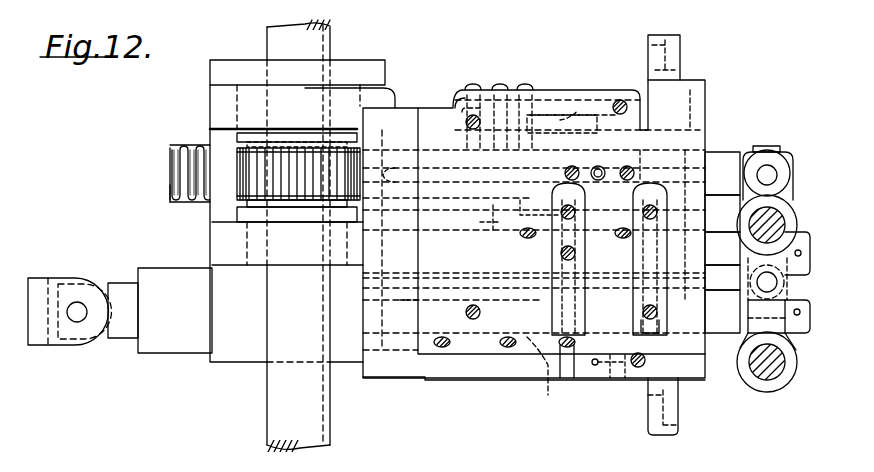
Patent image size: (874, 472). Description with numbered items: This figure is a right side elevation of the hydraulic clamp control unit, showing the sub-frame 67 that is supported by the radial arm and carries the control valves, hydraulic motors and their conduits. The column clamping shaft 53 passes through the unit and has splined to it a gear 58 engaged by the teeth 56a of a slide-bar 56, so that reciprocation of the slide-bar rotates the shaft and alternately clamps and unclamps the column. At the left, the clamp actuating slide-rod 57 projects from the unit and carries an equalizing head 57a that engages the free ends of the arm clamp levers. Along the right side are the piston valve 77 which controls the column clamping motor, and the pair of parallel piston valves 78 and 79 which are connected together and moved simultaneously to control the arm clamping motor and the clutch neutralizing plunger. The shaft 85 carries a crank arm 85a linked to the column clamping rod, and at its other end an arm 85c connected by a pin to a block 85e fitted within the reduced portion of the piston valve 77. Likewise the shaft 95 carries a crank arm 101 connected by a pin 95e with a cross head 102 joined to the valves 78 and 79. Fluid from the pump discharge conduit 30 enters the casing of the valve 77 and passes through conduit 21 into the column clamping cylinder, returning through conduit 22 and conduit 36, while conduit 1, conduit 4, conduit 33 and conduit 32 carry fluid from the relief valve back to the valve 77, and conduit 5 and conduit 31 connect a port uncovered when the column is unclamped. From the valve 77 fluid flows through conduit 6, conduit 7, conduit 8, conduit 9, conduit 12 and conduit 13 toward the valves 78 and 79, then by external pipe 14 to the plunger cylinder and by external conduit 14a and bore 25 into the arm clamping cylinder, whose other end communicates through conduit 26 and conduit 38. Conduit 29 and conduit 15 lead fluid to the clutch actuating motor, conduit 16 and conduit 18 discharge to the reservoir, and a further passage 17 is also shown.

The conduit 1 is at (634, 143).
The conduit 4 is at (619, 97).
The conduit 5 is at (458, 114).
The conduit 6 is at (490, 222).
The conduit 7 is at (535, 200).
The conduit 8 is at (656, 218).
The conduit 9 is at (574, 218).
The conduit 12 is at (642, 313).
The conduit 13 is at (560, 254).
The external pipe 14 is at (570, 350).
The external conduit 14a is at (722, 282).
The conduit 15 is at (508, 350).
The conduit 16 is at (444, 350).
The screw 17 is at (606, 372).
The conduit 18 is at (542, 376).
The conduit 21 is at (668, 172).
The conduit 22 is at (405, 181).
The bore 25 is at (659, 259).
The conduit 26 is at (406, 296).
The conduit 29 is at (465, 313).
The pump discharge conduit 30 is at (594, 170).
The conduit 31 is at (463, 125).
The conduit 32 is at (530, 127).
The conduit 33 is at (558, 98).
The conduit 36 is at (570, 112).
The conduit 38 is at (572, 318).
The column clamping shaft 53 is at (275, 35).
The slide-bar 56 is at (192, 144).
The teeth 56a is at (172, 197).
The clamp actuating slide-rod 57 is at (125, 334).
The equalizing head 57a is at (40, 285).
The gear 58 is at (240, 192).
The sub-frame 67 is at (392, 380).
The piston valve 77 is at (722, 173).
The piston valve 78 is at (757, 253).
The piston valve 79 is at (722, 311).
The shaft 85 is at (749, 224).
The crank arm 85a is at (767, 165).
The arm 85c is at (745, 185).
The block 85e is at (783, 150).
The shaft 95 is at (748, 370).
The pin 95e is at (752, 280).
The crank arm 101 is at (745, 340).
The cross head 102 is at (779, 316).